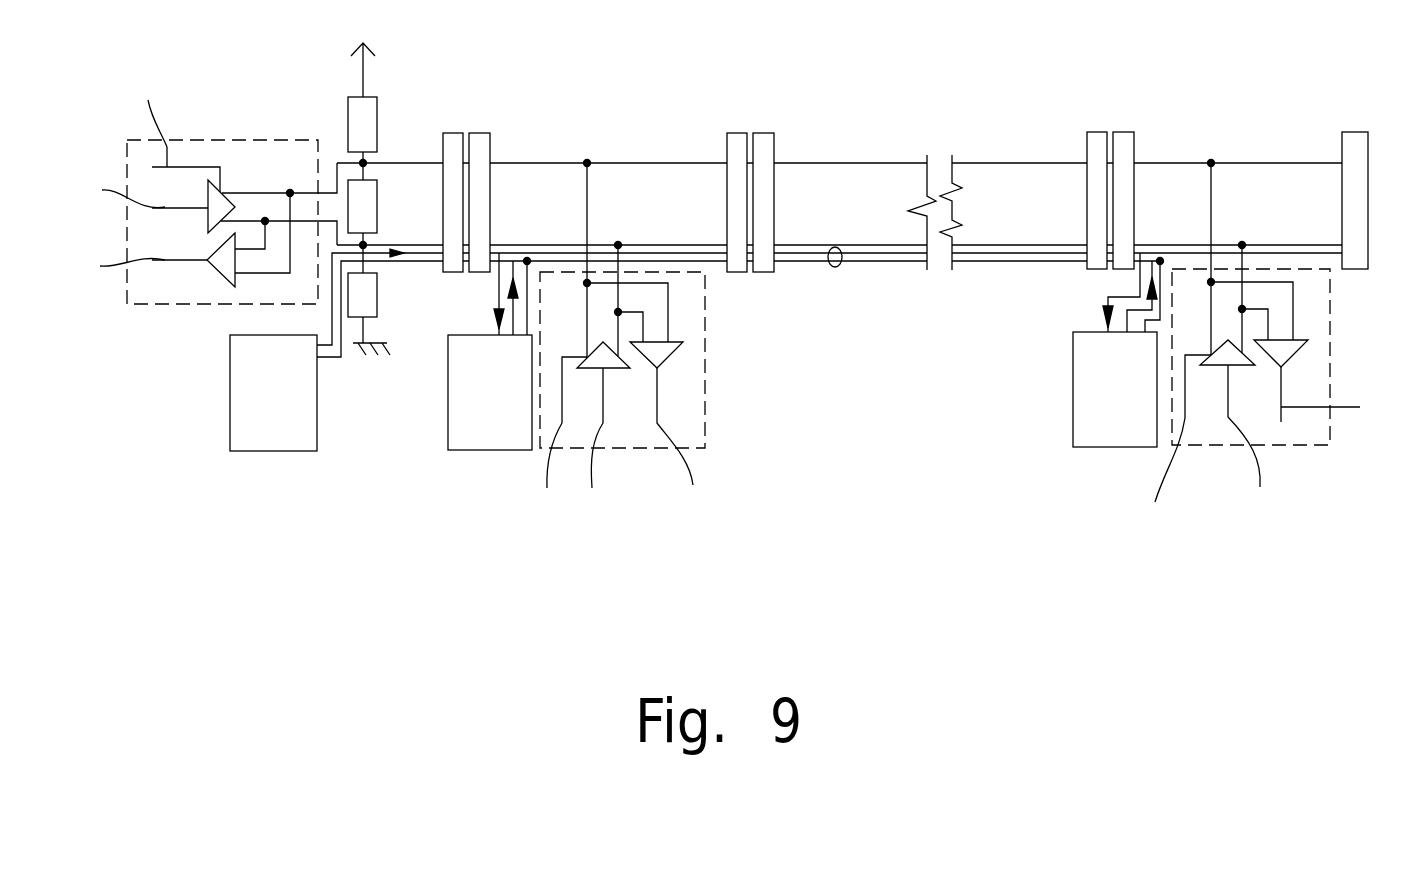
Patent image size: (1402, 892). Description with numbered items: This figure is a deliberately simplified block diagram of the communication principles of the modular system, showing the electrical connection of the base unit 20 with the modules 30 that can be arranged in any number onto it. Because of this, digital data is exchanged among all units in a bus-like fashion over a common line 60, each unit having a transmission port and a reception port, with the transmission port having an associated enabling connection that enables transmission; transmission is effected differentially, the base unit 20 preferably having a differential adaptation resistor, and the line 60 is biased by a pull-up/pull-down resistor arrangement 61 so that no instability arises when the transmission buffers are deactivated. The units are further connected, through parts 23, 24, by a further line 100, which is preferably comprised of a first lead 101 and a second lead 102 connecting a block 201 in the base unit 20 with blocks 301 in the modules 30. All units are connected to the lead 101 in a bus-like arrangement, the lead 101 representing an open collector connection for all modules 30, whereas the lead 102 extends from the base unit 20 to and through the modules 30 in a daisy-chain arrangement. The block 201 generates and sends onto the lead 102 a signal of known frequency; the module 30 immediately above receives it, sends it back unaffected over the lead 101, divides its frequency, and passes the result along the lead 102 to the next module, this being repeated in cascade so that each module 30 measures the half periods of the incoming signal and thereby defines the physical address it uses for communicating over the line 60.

The base unit 20 is at (170, 287).
The block 201 is at (263, 437).
The part 23 is at (452, 142).
The part 24 is at (480, 142).
The module 30 is at (633, 455).
The block 301 is at (467, 450).
The common line 60 is at (850, 187).
The pull-up/pull-down resistor arrangement 61 is at (398, 296).
The further line 100 is at (832, 267).
The first lead 101 is at (993, 260).
The second lead 102 is at (538, 253).